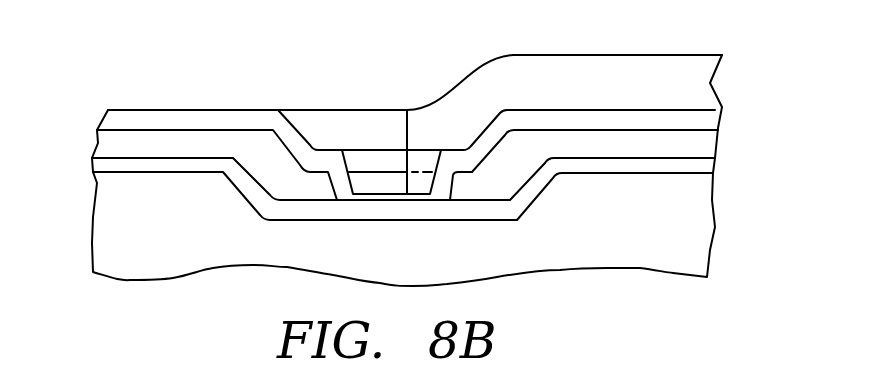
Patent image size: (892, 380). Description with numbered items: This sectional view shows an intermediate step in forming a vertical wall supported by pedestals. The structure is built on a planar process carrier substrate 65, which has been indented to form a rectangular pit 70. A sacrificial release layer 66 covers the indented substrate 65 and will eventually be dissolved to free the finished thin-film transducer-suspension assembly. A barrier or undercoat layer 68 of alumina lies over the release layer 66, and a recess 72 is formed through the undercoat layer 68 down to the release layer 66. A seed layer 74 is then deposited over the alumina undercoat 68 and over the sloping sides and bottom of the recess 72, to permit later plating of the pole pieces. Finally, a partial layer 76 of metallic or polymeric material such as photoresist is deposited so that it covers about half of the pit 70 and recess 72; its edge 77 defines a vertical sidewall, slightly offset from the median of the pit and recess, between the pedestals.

The process carrier substrate 65 is at (690, 242).
The release layer 66 is at (712, 166).
The undercoat layer 68 is at (713, 147).
The pit 70 is at (317, 123).
The recess 72 is at (365, 162).
The seed layer 74 is at (705, 123).
The partial layer 76 is at (697, 88).
The edge 77 is at (403, 127).